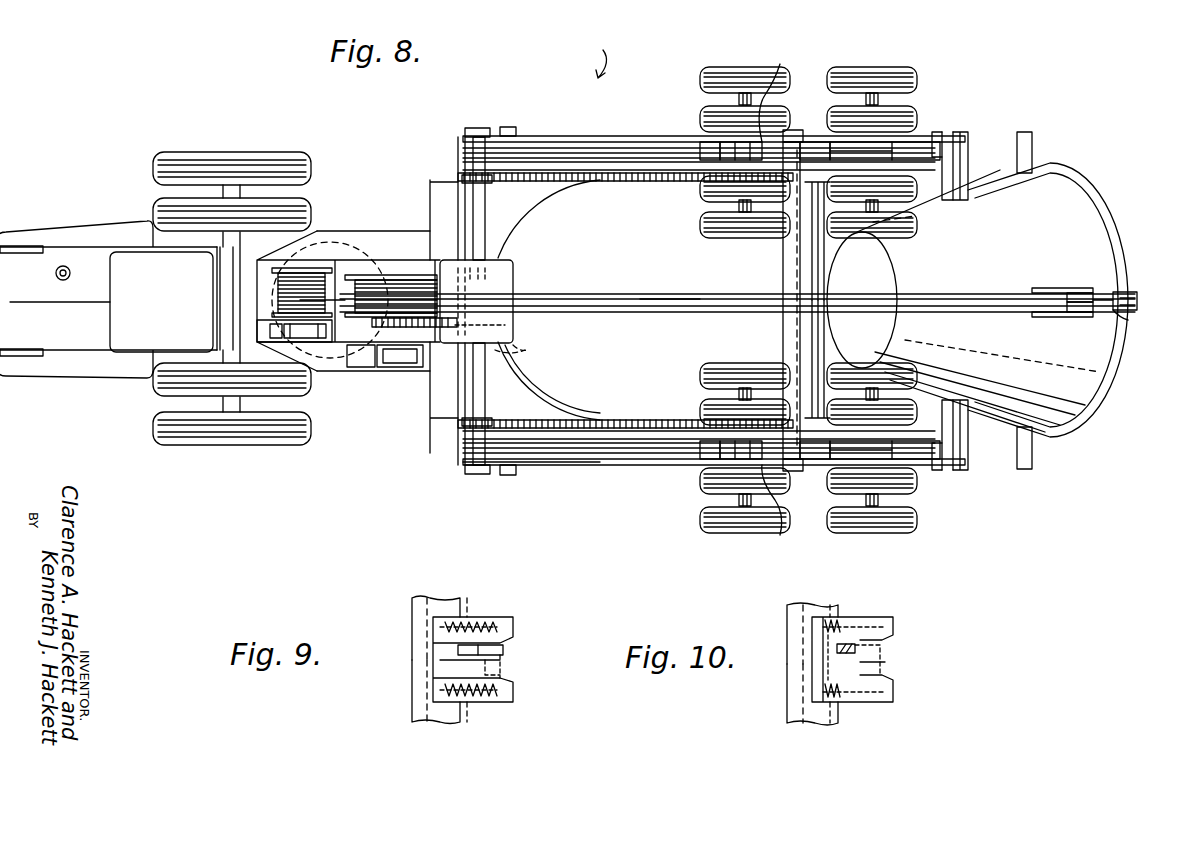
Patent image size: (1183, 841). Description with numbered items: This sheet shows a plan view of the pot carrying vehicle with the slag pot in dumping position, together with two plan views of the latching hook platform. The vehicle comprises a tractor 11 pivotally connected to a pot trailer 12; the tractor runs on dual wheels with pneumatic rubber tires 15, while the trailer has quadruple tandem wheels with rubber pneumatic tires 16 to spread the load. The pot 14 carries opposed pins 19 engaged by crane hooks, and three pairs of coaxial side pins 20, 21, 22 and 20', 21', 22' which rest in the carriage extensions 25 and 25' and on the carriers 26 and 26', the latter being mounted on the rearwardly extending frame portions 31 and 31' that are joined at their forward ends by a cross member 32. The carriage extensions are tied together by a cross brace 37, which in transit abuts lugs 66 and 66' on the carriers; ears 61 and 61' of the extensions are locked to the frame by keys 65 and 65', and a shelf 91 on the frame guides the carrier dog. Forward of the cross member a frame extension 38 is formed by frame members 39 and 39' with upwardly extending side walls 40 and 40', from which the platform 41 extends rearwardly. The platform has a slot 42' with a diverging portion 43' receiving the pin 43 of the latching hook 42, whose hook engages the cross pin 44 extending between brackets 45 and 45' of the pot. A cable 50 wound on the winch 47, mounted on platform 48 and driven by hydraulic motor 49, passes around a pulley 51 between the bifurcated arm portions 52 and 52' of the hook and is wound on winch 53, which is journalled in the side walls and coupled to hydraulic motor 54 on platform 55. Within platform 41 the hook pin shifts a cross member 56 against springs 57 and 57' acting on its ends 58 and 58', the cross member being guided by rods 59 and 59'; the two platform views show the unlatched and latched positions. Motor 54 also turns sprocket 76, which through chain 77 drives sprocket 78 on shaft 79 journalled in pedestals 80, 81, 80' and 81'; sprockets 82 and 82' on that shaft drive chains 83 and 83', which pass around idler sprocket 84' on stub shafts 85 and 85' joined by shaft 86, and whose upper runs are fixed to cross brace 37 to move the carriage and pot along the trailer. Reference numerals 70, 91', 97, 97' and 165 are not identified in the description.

In FIG. 8, the tractor 11 is at (62, 226).
In FIG. 8, the pot trailer 12 is at (550, 465).
In FIG. 8, the pot 14 is at (985, 248).
In FIG. 8, the pneumatic rubber tires 15 is at (153, 410).
In FIG. 8, the rubber pneumatic tires 16 is at (865, 520).
In FIG. 8, the pins 19 is at (1032, 138).
In FIG. 8, the pin 20 is at (981, 452).
In FIG. 8, the pin 21 is at (979, 466).
In FIG. 8, the pin 22 is at (954, 486).
In FIG. 8, the pin 20' is at (980, 154).
In FIG. 8, the pin 21' is at (971, 145).
In FIG. 8, the pin 22' is at (952, 120).
In FIG. 8, the carriage extension 25 is at (815, 471).
In FIG. 8, the carrier 26 is at (800, 491).
In FIG. 8, the carriage extension 25' is at (815, 133).
In FIG. 8, the carrier 26' is at (802, 110).
In FIG. 8, the frame portion 31 is at (714, 478).
In FIG. 8, the frame portion 31' is at (714, 128).
In FIG. 8, the cross member 32 is at (500, 380).
In FIG. 8, the cross brace 37 is at (783, 275).
In FIG. 8, the frame extension 38 is at (333, 380).
In FIG. 8, the frame member 39 is at (416, 399).
In FIG. 9, the frame member 39 is at (424, 710).
In FIG. 10, the frame member 39 is at (795, 712).
In FIG. 8, the frame member 39' is at (415, 220).
In FIG. 9, the frame member 39' is at (422, 613).
In FIG. 10, the frame member 39' is at (804, 621).
In FIG. 8, the side wall 40 is at (355, 425).
In FIG. 8, the side wall 40' is at (373, 223).
In FIG. 8, the platform 41 is at (513, 262).
In FIG. 9, the platform 41 is at (513, 622).
In FIG. 10, the platform 41 is at (893, 622).
In FIG. 8, the latching hook 42 is at (1145, 300).
In FIG. 8, the slot 42' is at (737, 285).
In FIG. 9, the slot 42' is at (434, 676).
In FIG. 10, the slot 42' is at (911, 679).
In FIG. 9, the pin 43 is at (513, 647).
In FIG. 10, the pin 43 is at (898, 638).
In FIG. 8, the diverging portion 43' is at (737, 325).
In FIG. 9, the diverging portion 43' is at (542, 666).
In FIG. 10, the diverging portion 43' is at (909, 660).
In FIG. 8, the cross pin 44 is at (1128, 320).
In FIG. 8, the bracket 45 is at (1051, 335).
In FIG. 8, the bracket 45' is at (1061, 263).
In FIG. 8, the winch 47 is at (320, 268).
In FIG. 8, the platform 48 is at (280, 275).
In FIG. 8, the hydraulic motor 49 is at (257, 326).
In FIG. 8, the cable 50 is at (678, 292).
In FIG. 8, the pulley 51 is at (1118, 292).
In FIG. 8, the bifurcated arm portion 52 is at (1069, 325).
In FIG. 8, the bifurcated arm portion 52' is at (1071, 276).
In FIG. 8, the winch 53 is at (435, 275).
In FIG. 8, the hydraulic motor 54 is at (360, 367).
In FIG. 8, the platform 55 is at (405, 367).
In FIG. 9, the cross member 56 is at (505, 672).
In FIG. 10, the cross member 56 is at (812, 662).
In FIG. 9, the spring 57 is at (478, 732).
In FIG. 10, the spring 57 is at (841, 732).
In FIG. 9, the spring 57' is at (480, 590).
In FIG. 10, the spring 57' is at (831, 596).
In FIG. 9, the end 58 is at (494, 718).
In FIG. 10, the end 58 is at (859, 716).
In FIG. 9, the end 58' is at (490, 598).
In FIG. 10, the end 58' is at (854, 604).
In FIG. 9, the rod 59 is at (501, 706).
In FIG. 10, the rod 59 is at (876, 714).
In FIG. 9, the rod 59' is at (431, 616).
In FIG. 10, the rod 59' is at (871, 601).
In FIG. 8, the ear 61 is at (694, 492).
In FIG. 8, the ear portion 61' is at (694, 131).
In FIG. 8, the key 65 is at (506, 492).
In FIG. 8, the key 65' is at (514, 109).
In FIG. 8, the lug 66 is at (706, 481).
In FIG. 8, the lug 66' is at (703, 138).
In FIG. 8, the vehicle 70 is at (605, 54).
In FIG. 8, the sprocket 76 is at (445, 348).
In FIG. 8, the chain 77 is at (520, 330).
In FIG. 8, the sprocket 78 is at (526, 351).
In FIG. 8, the shaft 79 is at (500, 398).
In FIG. 8, the pedestal 80 is at (456, 473).
In FIG. 8, the pedestal 80' is at (456, 145).
In FIG. 8, the pedestal 81 is at (459, 404).
In FIG. 8, the pedestal 81' is at (460, 198).
In FIG. 8, the sprocket 82 is at (495, 407).
In FIG. 8, the sprocket 82' is at (497, 193).
In FIG. 8, the chain 83 is at (625, 407).
In FIG. 8, the chain 83' is at (625, 194).
In FIG. 8, the sprocket 84' is at (885, 298).
In FIG. 8, the stub shaft 85 is at (790, 359).
In FIG. 8, the stub shaft 85' is at (790, 241).
In FIG. 8, the shaft 86 is at (830, 270).
In FIG. 8, the shelf 91 is at (699, 465).
In FIG. 8, the beam 91' is at (699, 131).
In FIG. 8, the beam 97 is at (699, 471).
In FIG. 8, the beam 97' is at (699, 187).
In FIG. 8, the brace 165 is at (753, 295).